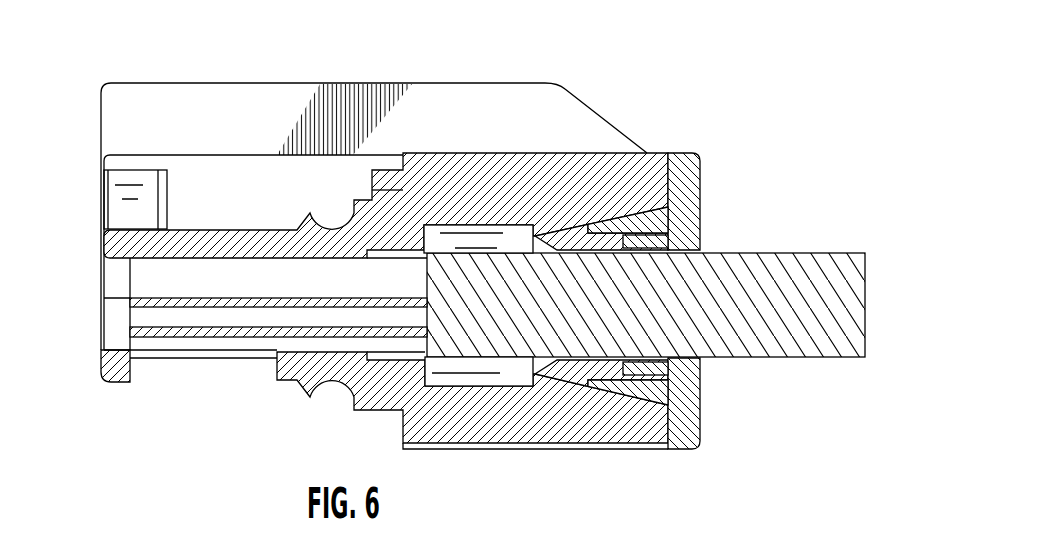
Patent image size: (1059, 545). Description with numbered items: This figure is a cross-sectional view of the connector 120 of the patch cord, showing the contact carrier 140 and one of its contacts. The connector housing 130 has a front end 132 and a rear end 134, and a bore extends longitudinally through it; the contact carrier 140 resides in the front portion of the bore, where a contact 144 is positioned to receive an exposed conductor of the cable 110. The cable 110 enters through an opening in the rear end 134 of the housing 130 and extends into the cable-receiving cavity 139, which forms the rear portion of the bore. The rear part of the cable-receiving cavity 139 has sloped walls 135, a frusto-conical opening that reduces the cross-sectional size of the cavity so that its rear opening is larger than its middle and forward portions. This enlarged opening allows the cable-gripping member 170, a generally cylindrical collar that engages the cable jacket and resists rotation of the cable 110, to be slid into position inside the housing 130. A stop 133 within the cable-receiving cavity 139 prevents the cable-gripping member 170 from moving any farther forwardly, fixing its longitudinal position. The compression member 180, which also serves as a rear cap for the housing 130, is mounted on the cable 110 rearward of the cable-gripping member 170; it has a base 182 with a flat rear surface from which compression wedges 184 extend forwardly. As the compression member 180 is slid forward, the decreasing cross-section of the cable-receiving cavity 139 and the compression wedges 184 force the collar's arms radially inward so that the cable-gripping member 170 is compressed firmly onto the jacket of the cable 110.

The cable 110 is at (813, 252).
The connector 120 is at (620, 63).
The connector housing 130 is at (353, 83).
The front end 132 is at (101, 123).
The stop 133 is at (513, 373).
The rear end 134 is at (661, 152).
The sloped walls 135 is at (593, 385).
The cable-receiving cavity 139 is at (492, 233).
The contact carrier 140 is at (167, 275).
The contact 144 is at (210, 313).
The cable-gripping member 170 is at (557, 378).
The compression member 180 is at (688, 222).
The base 182 is at (697, 430).
The compression wedges 184 is at (643, 395).